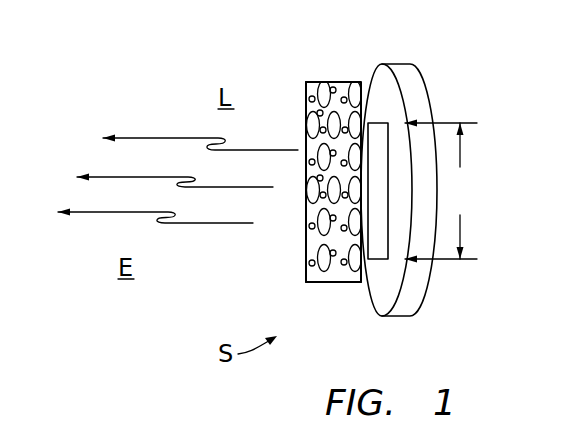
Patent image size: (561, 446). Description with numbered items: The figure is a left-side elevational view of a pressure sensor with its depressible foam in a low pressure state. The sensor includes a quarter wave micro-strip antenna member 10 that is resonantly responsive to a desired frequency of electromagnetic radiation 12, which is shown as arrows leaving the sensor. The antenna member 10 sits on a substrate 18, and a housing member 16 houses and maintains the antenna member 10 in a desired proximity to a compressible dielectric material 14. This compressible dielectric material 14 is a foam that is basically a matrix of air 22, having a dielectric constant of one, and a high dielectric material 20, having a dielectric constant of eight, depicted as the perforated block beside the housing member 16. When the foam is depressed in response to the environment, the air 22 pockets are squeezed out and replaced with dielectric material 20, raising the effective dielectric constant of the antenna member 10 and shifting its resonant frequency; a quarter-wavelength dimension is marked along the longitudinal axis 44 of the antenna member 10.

The antenna member 10 is at (377, 128).
The electromagnetic radiation 12 is at (178, 173).
The compressible dielectric material 14 is at (306, 282).
The housing member 16 is at (415, 195).
The substrate 18 is at (385, 93).
The dielectric material 20 is at (306, 240).
The air 22 is at (336, 82).
The longitudinal axis 44 is at (462, 237).